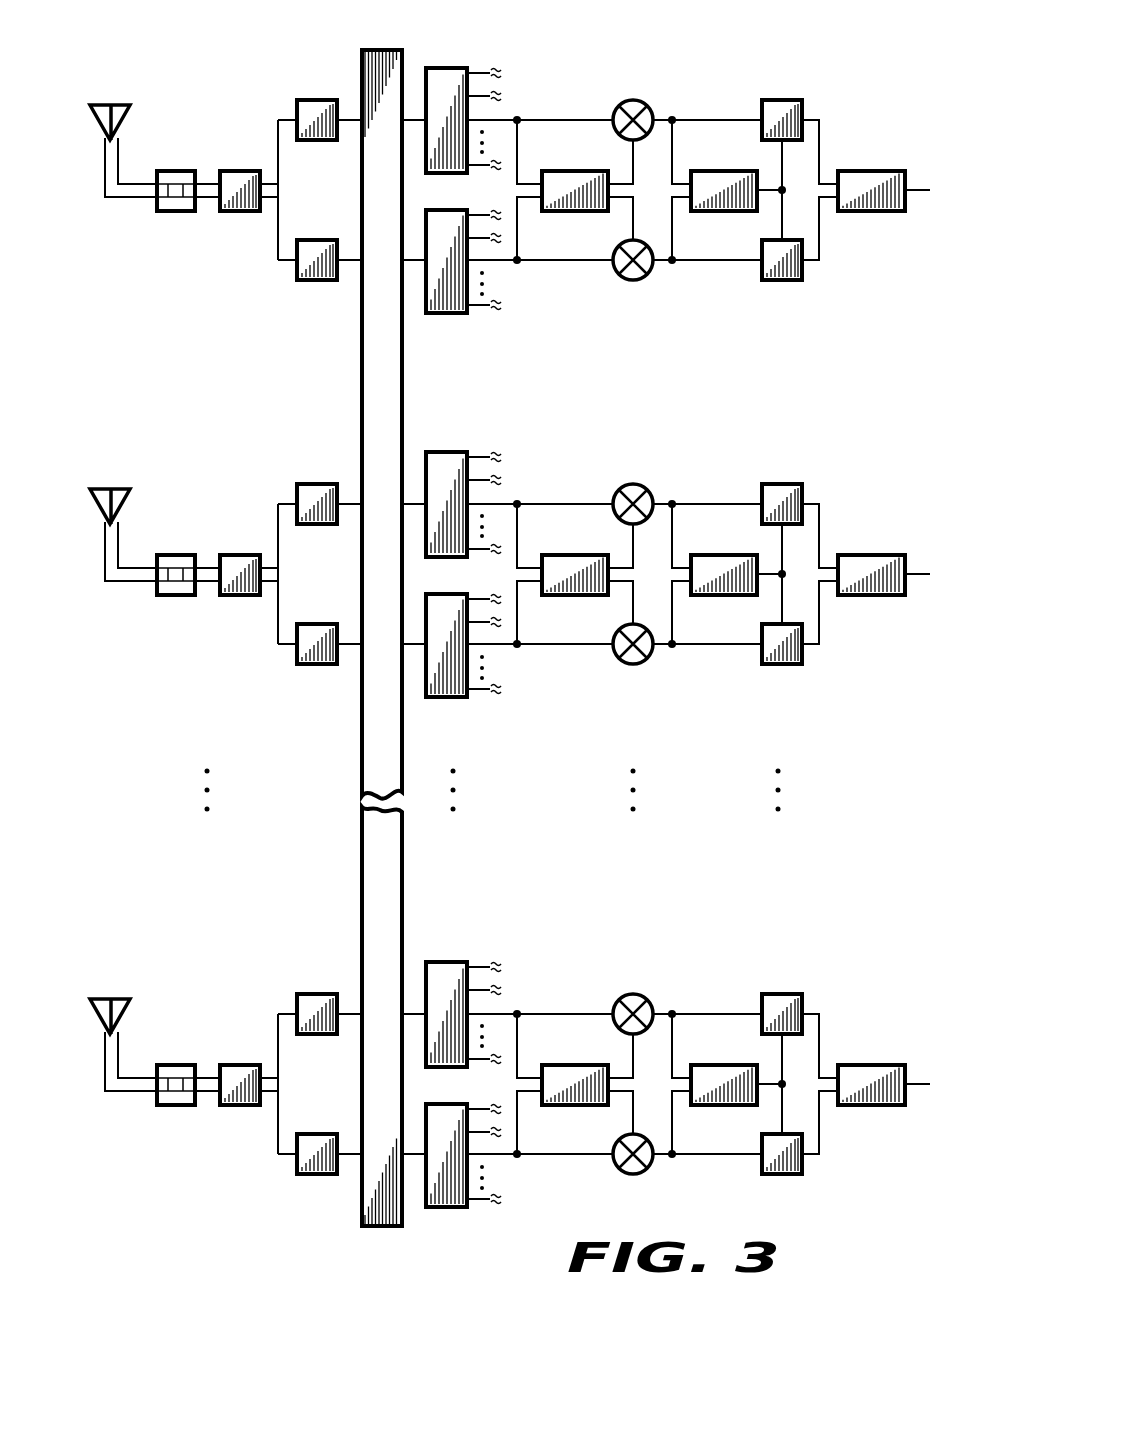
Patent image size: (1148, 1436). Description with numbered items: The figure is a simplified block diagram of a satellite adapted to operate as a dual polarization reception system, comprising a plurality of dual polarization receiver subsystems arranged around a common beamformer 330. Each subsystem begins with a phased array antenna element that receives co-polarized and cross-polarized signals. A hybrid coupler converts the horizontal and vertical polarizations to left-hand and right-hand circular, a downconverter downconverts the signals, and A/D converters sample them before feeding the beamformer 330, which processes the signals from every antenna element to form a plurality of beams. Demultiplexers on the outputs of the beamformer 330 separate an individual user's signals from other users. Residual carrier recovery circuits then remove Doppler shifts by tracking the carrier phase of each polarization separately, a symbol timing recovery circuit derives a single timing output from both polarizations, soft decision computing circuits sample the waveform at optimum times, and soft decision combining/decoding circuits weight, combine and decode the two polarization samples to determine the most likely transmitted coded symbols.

The beamformer 330 is at (383, 47).